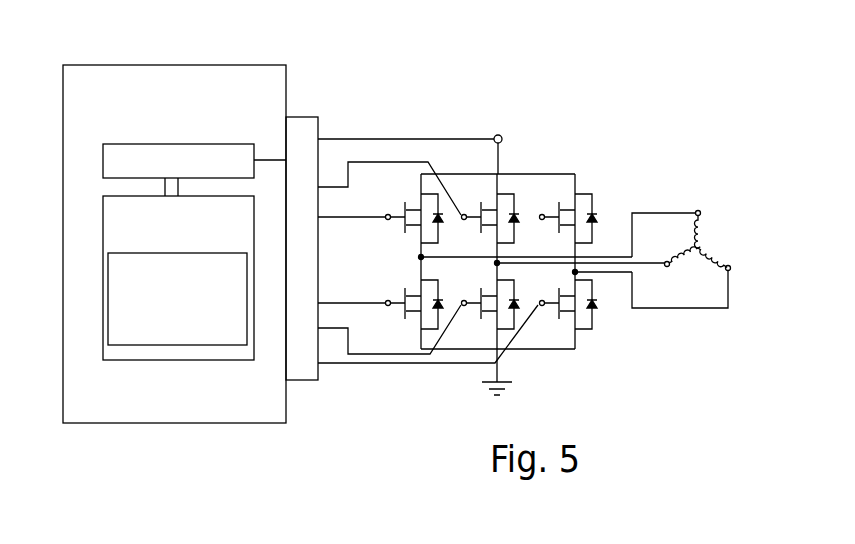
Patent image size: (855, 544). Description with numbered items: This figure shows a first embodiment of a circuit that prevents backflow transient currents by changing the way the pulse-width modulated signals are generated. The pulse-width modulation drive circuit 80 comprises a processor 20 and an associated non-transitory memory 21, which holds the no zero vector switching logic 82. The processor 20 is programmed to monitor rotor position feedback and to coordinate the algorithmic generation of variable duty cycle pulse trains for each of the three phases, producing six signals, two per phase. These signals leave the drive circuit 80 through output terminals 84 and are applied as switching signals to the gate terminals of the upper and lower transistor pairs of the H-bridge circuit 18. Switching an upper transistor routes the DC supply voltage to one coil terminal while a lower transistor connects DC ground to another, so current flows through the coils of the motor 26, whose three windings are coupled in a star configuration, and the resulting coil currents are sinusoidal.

The pulse-width modulation drive circuit 80 is at (138, 65).
The processor 20 is at (122, 155).
The non-transitory memory 21 is at (122, 214).
The no zero vector switching logic 82 is at (185, 345).
The output terminals 84 is at (309, 106).
The H-bridge circuit 18 is at (556, 159).
The motor 26 is at (740, 216).